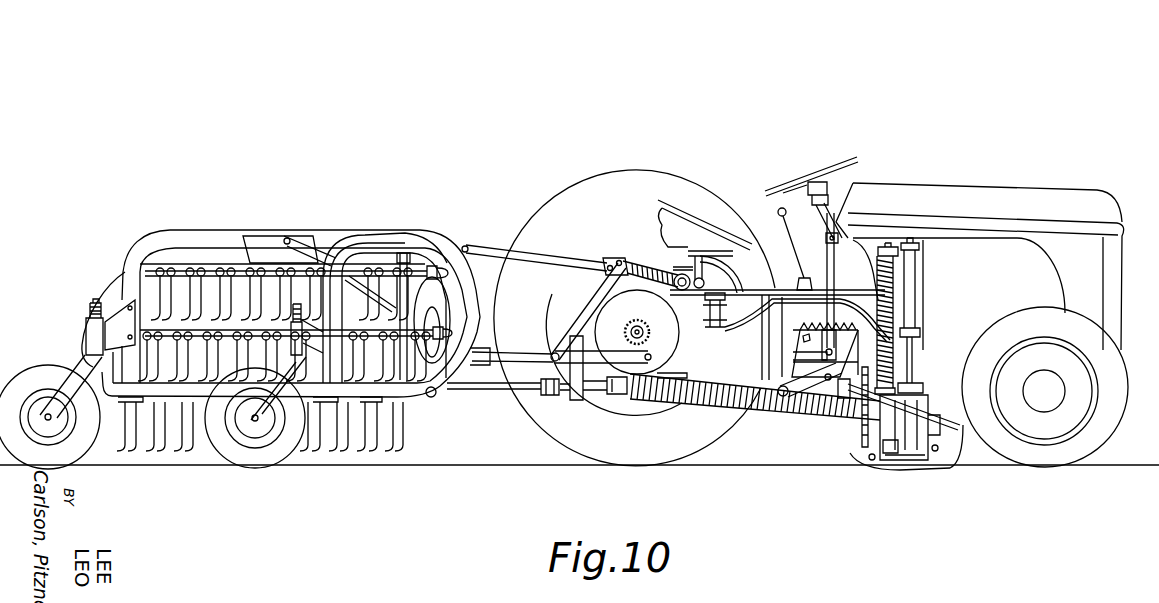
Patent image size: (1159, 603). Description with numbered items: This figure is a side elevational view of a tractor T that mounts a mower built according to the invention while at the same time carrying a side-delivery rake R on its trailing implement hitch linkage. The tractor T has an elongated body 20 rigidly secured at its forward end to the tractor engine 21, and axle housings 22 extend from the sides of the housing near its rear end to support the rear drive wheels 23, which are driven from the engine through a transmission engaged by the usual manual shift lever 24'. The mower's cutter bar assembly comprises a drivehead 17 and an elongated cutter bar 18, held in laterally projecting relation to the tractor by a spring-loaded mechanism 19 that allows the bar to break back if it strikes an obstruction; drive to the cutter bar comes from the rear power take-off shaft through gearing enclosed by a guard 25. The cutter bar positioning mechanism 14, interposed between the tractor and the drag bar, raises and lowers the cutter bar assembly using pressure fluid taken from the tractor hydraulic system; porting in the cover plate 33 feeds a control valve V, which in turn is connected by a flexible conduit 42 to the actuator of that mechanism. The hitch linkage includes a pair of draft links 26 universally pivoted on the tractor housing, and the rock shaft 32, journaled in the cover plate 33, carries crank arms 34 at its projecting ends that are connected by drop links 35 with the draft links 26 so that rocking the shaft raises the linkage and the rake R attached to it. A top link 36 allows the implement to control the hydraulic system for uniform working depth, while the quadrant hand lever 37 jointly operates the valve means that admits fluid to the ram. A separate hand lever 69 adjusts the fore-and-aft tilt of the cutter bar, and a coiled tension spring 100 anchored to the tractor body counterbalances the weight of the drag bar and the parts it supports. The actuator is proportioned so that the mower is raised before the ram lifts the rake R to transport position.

The side-delivery rake R is at (396, 222).
The tractor T is at (918, 178).
The cutter bar positioning mechanism 14 is at (918, 289).
The drivehead 17 is at (930, 404).
The cutter bar 18 is at (900, 466).
The spring-loaded mechanism 19 is at (813, 418).
The tractor body 20 is at (713, 372).
The tractor engine 21 is at (985, 317).
The axle housings 22 is at (648, 341).
The rear drive wheels 23 is at (558, 433).
The manual shift lever 24' is at (798, 249).
The guard 25 is at (578, 402).
The draft links 26 is at (514, 357).
The rock shaft 32 is at (675, 289).
The cover plate 33 is at (647, 332).
The crank arms 34 is at (653, 267).
The drop links 35 is at (588, 304).
The top link 36 is at (565, 262).
The hand lever 37 is at (727, 256).
The flexible conduit 42 is at (786, 303).
The hand lever 69 is at (826, 311).
The coiled tension spring 100 is at (878, 283).
The control valve V is at (712, 329).